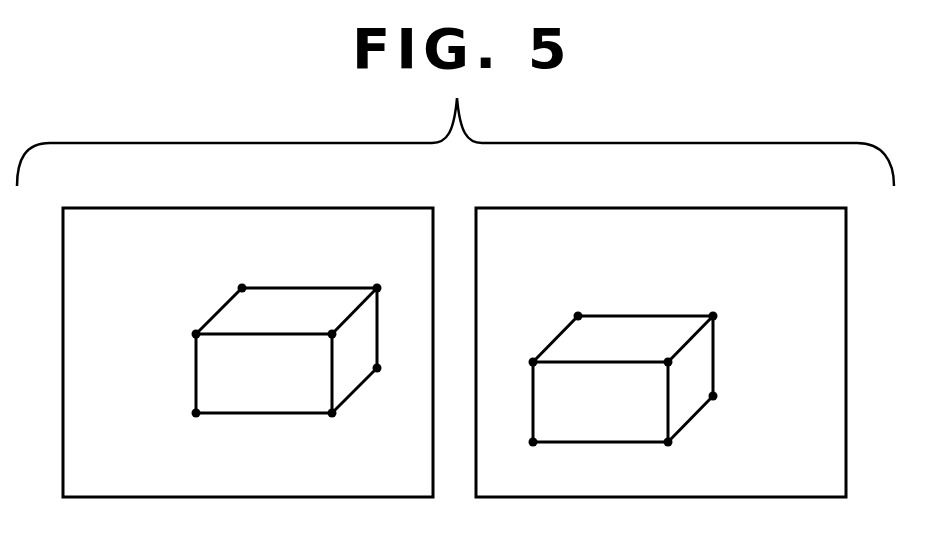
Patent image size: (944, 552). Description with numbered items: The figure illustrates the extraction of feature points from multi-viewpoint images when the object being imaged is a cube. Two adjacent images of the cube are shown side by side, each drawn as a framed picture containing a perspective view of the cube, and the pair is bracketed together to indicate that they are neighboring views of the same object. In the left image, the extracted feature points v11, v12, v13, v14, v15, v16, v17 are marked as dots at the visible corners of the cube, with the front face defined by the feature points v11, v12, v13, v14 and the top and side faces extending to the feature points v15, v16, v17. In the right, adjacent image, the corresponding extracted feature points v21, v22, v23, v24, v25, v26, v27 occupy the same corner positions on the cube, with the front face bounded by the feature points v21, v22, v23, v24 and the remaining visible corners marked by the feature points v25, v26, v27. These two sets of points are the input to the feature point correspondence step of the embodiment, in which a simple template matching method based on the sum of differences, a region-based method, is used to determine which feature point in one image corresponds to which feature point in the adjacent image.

The extracted feature point v11 is at (174, 331).
The extracted feature point v12 is at (314, 317).
The extracted feature point v13 is at (329, 431).
The extracted feature point v14 is at (194, 431).
The extracted feature point v15 is at (242, 272).
The extracted feature point v16 is at (376, 271).
The extracted feature point v17 is at (400, 366).
The extracted feature point v21 is at (512, 361).
The extracted feature point v22 is at (650, 345).
The extracted feature point v23 is at (665, 459).
The extracted feature point v24 is at (532, 459).
The extracted feature point v25 is at (579, 299).
The extracted feature point v26 is at (713, 299).
The extracted feature point v27 is at (736, 395).